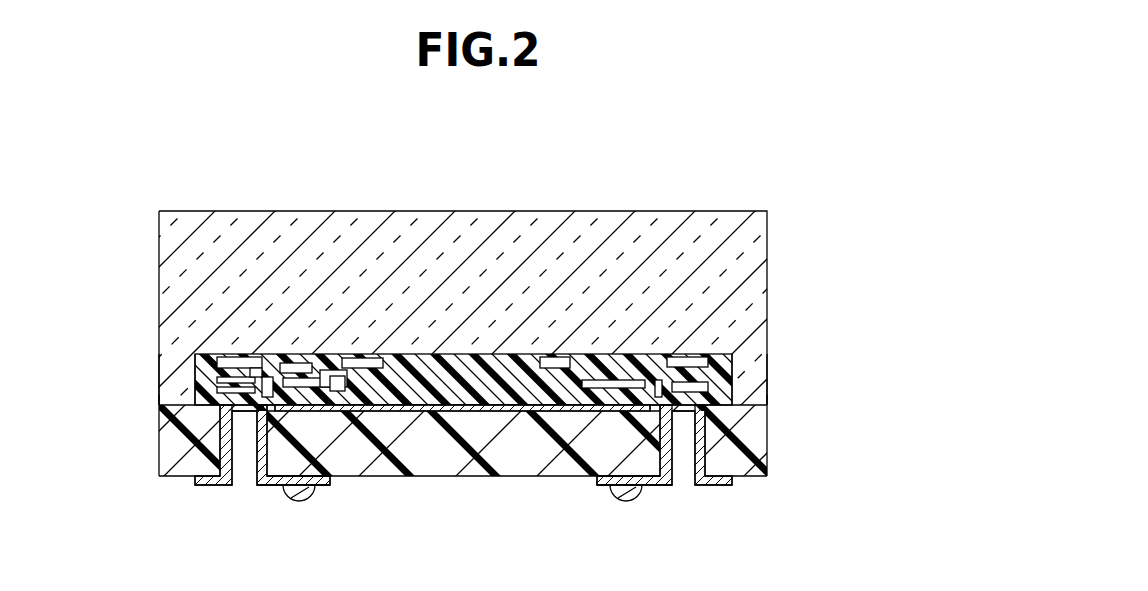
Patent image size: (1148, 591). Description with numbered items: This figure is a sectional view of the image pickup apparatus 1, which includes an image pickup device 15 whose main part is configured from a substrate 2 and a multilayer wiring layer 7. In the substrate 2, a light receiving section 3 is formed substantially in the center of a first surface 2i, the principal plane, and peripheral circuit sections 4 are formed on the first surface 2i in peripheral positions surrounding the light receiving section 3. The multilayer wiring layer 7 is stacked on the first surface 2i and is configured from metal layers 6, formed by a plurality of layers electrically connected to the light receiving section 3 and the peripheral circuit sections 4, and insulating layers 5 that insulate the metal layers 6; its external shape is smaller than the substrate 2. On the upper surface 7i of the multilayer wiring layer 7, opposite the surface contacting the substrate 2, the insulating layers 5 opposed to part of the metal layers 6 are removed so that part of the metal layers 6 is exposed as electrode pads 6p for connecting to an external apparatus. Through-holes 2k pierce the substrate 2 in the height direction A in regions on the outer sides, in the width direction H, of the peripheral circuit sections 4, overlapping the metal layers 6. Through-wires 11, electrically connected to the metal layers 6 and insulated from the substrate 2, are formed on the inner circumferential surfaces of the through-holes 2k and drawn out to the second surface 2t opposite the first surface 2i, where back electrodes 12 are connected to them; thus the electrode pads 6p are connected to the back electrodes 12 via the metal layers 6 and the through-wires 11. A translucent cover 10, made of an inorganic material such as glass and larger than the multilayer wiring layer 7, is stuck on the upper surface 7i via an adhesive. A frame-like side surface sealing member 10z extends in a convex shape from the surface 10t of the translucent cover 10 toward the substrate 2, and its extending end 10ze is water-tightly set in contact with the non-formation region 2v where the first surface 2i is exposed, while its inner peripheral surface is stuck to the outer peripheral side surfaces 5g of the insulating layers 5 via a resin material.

The image pickup apparatus 1 is at (829, 174).
The substrate 2 is at (568, 478).
The first surface 2i is at (427, 391).
The second surface 2t is at (385, 479).
The through-holes 2k is at (258, 486).
The non-formation region 2v is at (177, 418).
The light receiving section 3 is at (430, 412).
The peripheral circuit sections 4 is at (335, 425).
The insulating layers 5 is at (726, 370).
The outer peripheral side surfaces 5g is at (188, 372).
The metal layers 6 is at (282, 363).
The electrode pads 6p is at (236, 355).
The multilayer wiring layer 7 is at (793, 139).
The upper surface 7i is at (462, 408).
The translucent cover 10 is at (385, 235).
The surface 10t is at (483, 362).
The side surface sealing member 10z is at (161, 368).
The extending end 10ze is at (165, 389).
The through-wires 11 is at (227, 486).
The back electrodes 12 is at (299, 502).
The image pickup device 15 is at (494, 332).
The width direction H is at (108, 196).
The height direction A is at (135, 259).